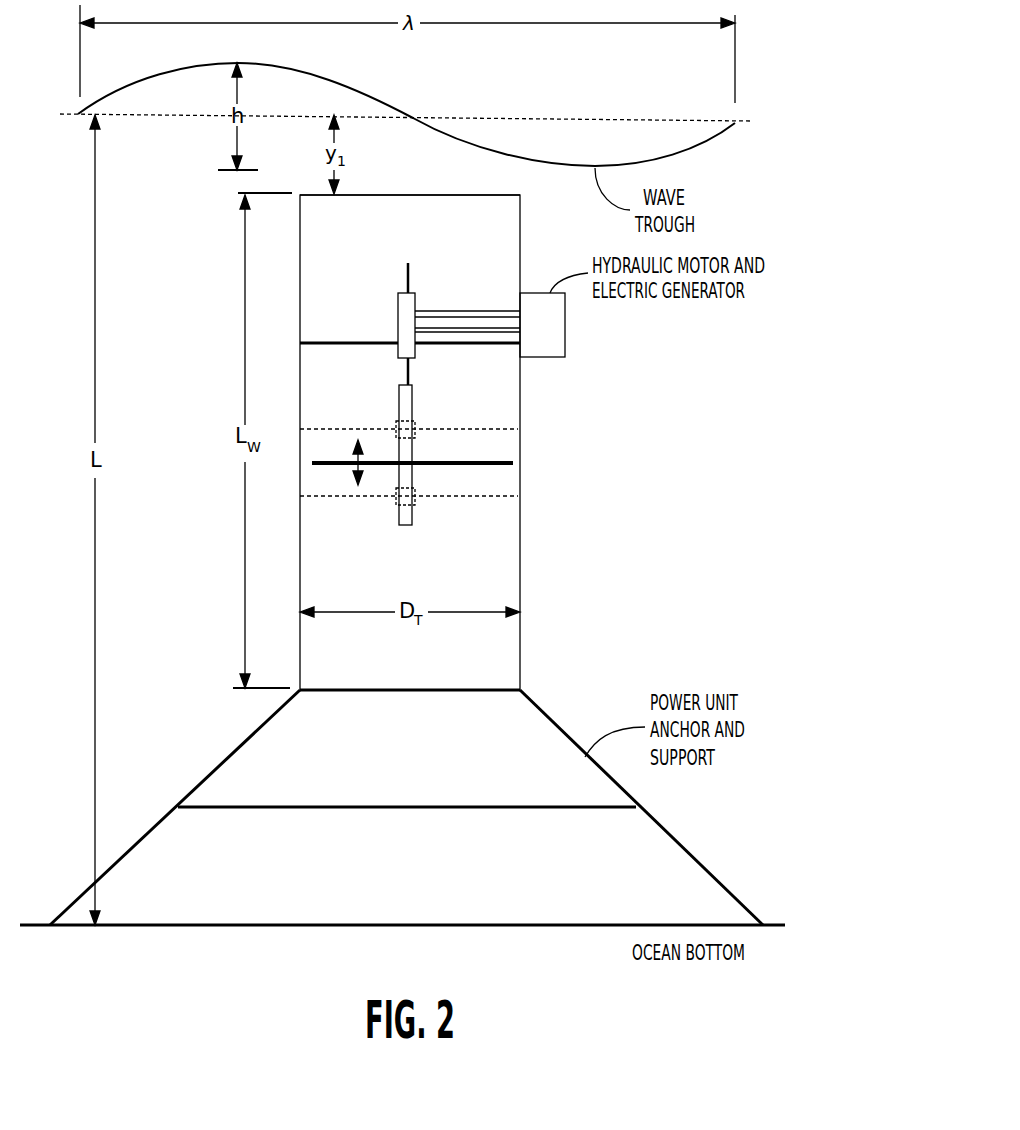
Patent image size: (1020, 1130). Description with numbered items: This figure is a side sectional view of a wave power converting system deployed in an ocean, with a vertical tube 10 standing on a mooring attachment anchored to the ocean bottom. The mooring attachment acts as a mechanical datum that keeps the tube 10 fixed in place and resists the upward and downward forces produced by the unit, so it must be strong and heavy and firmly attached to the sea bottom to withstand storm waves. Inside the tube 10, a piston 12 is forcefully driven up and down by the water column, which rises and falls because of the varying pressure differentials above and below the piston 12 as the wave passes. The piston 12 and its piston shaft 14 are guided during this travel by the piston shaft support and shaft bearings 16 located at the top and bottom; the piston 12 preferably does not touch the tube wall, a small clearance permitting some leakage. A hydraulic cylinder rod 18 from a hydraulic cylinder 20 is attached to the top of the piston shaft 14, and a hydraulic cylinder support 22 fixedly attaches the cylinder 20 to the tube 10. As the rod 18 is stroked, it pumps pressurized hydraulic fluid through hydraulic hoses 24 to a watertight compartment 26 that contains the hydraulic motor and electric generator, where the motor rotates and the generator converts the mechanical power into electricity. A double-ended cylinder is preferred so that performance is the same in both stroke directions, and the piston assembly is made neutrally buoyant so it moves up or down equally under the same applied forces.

The tube 10 is at (520, 597).
The piston 12 is at (483, 463).
The piston shaft 14 is at (407, 475).
The piston shaft support and shaft bearings 16 is at (452, 497).
The hydraulic cylinder rod 18 is at (405, 366).
The hydraulic cylinder 20 is at (398, 293).
The hydraulic cylinder support 22 is at (352, 343).
The hydraulic hoses 24 is at (490, 333).
The watertight compartment 26 is at (470, 249).